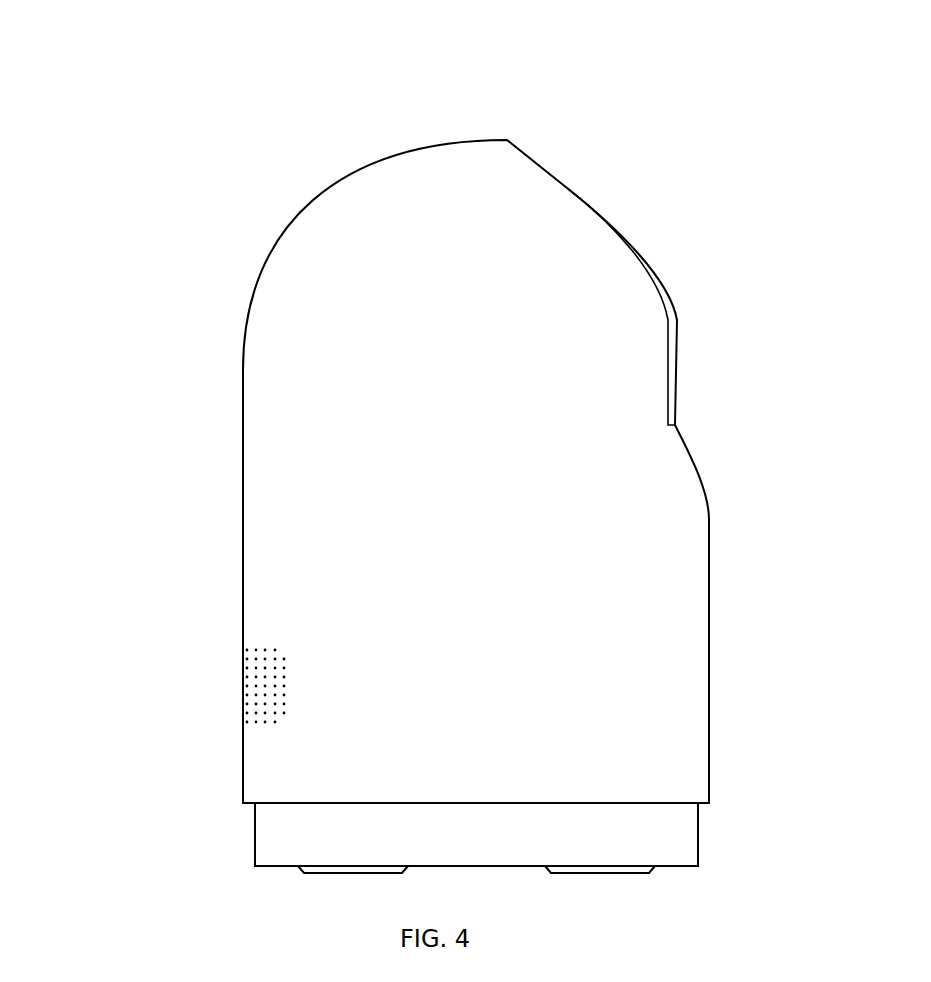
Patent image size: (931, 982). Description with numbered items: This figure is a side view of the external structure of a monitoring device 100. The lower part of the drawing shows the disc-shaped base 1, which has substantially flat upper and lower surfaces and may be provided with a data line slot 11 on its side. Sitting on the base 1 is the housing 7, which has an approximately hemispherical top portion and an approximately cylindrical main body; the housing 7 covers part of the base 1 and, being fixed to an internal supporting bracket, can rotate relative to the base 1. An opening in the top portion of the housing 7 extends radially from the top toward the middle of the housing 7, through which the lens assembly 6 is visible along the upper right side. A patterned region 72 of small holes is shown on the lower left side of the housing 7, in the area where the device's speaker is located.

The monitoring device 100 is at (437, 438).
The base 1 is at (442, 801).
The data line slot 11 is at (255, 834).
The lens assembly 6 is at (658, 300).
The housing 7 is at (437, 471).
The speaker holes 72 is at (243, 717).